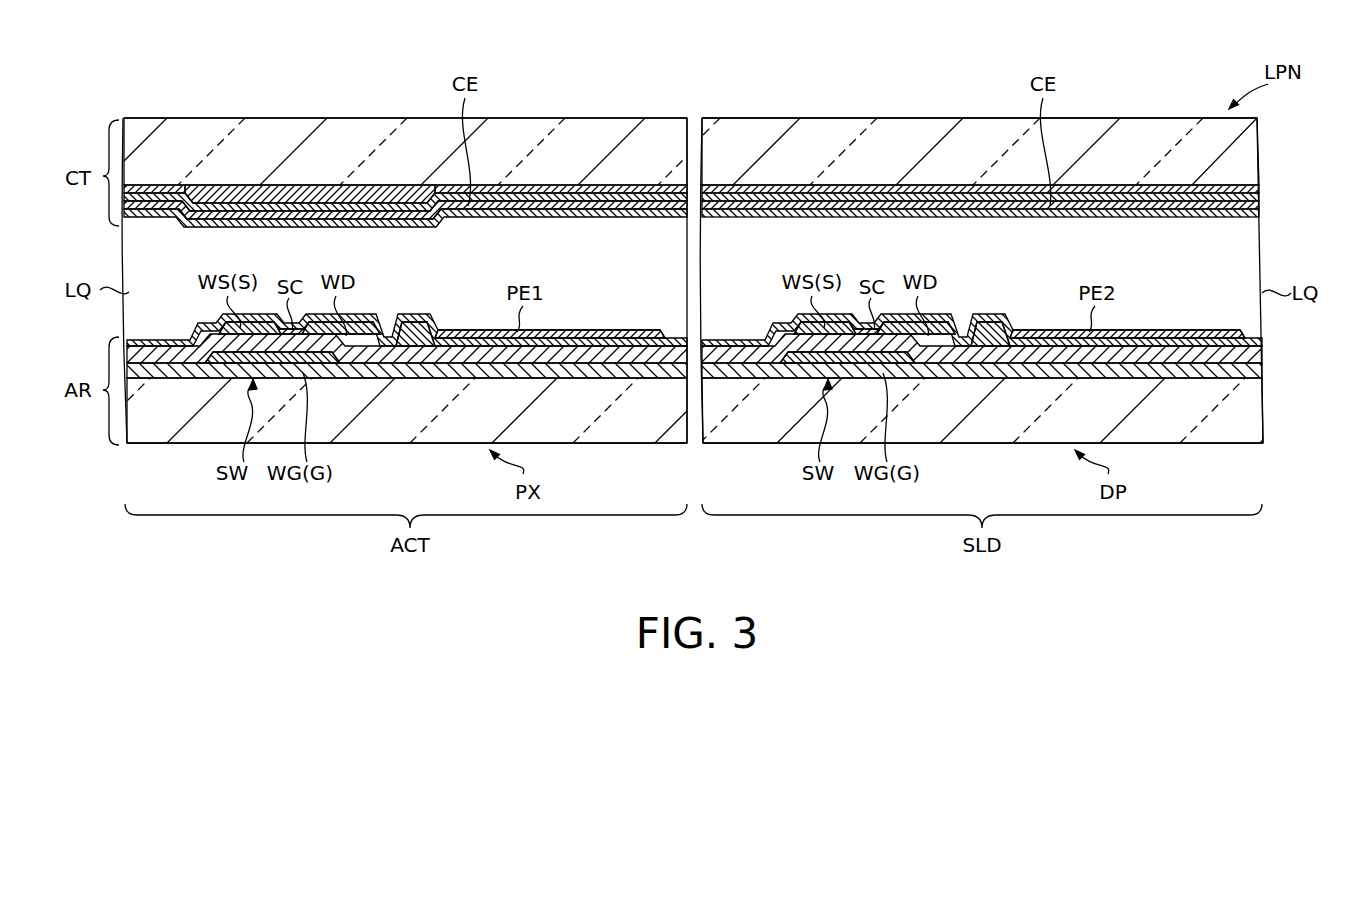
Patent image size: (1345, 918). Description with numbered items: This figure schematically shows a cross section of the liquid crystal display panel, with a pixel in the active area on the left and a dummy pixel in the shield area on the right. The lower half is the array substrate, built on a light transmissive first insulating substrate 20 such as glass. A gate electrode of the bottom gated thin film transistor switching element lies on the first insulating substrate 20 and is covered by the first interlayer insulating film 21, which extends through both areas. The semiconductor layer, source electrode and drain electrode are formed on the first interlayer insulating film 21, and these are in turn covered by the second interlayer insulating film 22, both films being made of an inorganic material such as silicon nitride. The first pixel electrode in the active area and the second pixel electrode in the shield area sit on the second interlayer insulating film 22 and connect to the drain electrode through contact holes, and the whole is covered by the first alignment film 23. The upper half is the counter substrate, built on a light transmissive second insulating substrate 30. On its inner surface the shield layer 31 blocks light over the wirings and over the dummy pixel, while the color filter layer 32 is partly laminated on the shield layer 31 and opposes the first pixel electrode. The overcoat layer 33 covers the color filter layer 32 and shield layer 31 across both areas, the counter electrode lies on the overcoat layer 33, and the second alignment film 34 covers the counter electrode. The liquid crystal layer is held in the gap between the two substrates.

The first insulating substrate 20 is at (575, 443).
The first interlayer insulating film 21 is at (615, 371).
The second interlayer insulating film 22 is at (655, 357).
The first alignment film 23 is at (640, 331).
The second insulating substrate 30 is at (537, 126).
The shield layer 31 is at (292, 186).
The color filter layer 32 is at (580, 192).
The overcoat layer 33 is at (620, 196).
The second alignment film 34 is at (582, 222).